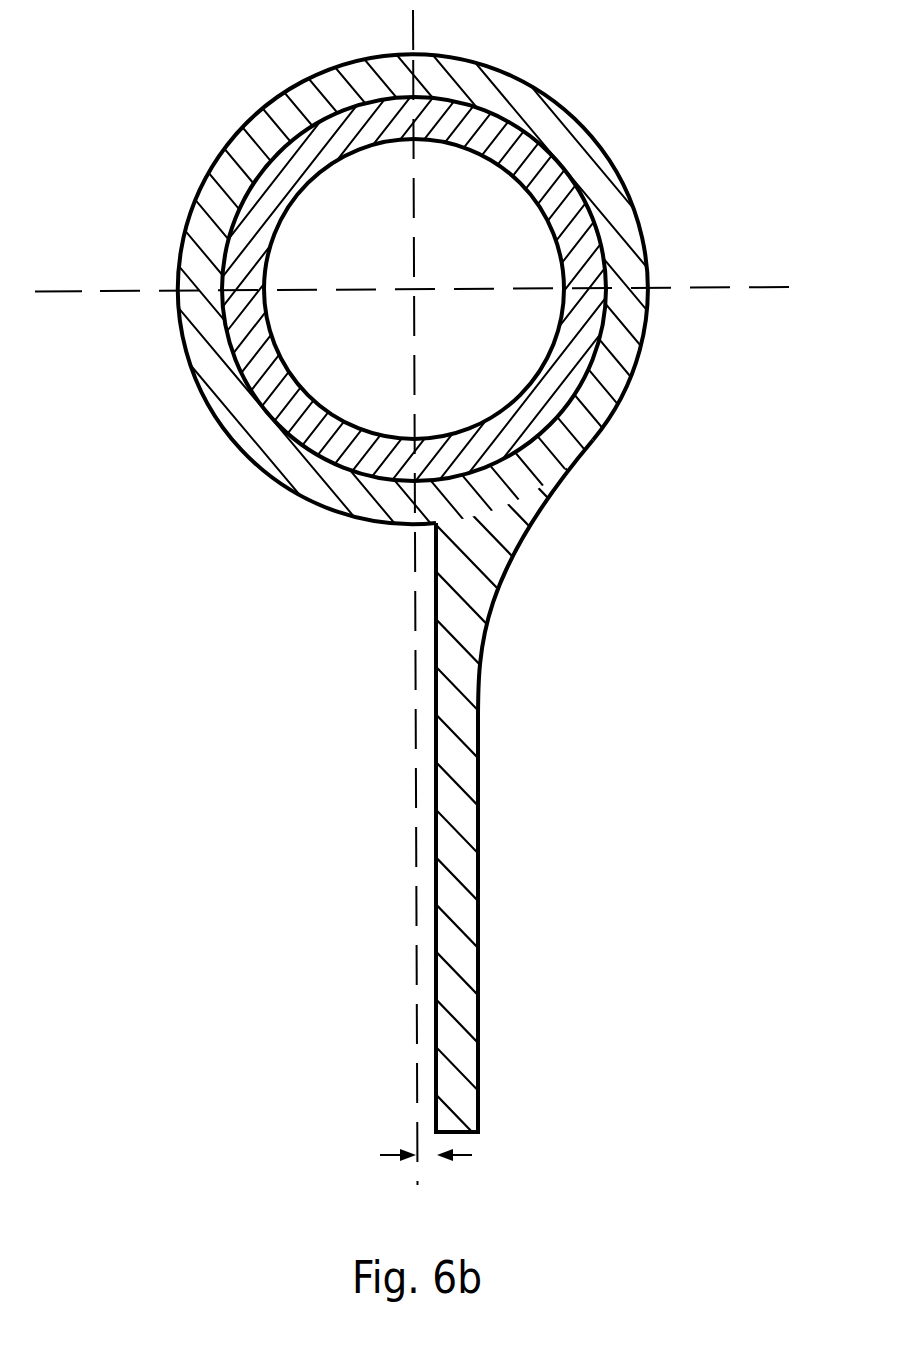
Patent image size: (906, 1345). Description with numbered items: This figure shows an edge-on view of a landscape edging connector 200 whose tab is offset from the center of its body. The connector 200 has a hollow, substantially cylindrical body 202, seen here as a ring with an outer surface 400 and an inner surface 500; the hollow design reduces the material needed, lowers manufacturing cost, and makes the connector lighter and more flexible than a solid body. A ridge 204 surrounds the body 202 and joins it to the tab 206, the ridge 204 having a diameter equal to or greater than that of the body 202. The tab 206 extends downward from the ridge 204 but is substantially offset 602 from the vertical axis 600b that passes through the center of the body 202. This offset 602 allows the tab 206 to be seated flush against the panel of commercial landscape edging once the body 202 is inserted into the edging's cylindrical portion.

The landscape edging connector 200 is at (307, 598).
The body 202 is at (313, 160).
The ridge 204 is at (502, 97).
The tab 206 is at (479, 757).
The outer surface 400 is at (568, 175).
The inner surface 500 is at (305, 393).
The vertical axis 600b is at (415, 722).
The offset 602 is at (398, 1158).